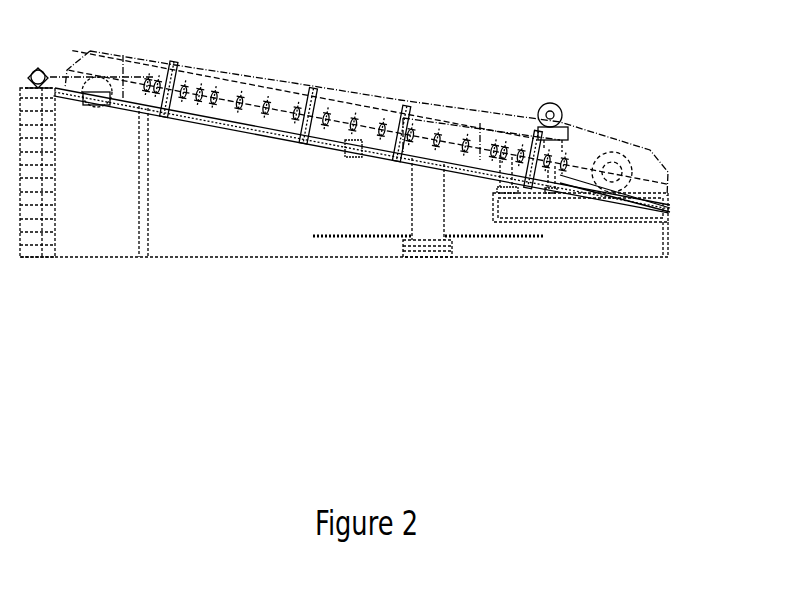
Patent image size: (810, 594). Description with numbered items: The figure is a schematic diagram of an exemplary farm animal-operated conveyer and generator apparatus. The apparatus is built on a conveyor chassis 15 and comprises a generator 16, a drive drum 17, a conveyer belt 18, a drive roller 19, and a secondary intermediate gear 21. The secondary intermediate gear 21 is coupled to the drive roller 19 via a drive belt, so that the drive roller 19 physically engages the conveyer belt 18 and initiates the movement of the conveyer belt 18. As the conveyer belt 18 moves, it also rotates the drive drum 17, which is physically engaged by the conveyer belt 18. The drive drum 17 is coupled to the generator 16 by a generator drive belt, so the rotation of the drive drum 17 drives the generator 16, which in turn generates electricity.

The conveyor chassis 15 is at (162, 117).
The generator 16 is at (122, 310).
The drive drum 17 is at (100, 107).
The conveyer belt 18 is at (461, 165).
The drive roller 19 is at (580, 153).
The secondary intermediate gear 21 is at (557, 105).